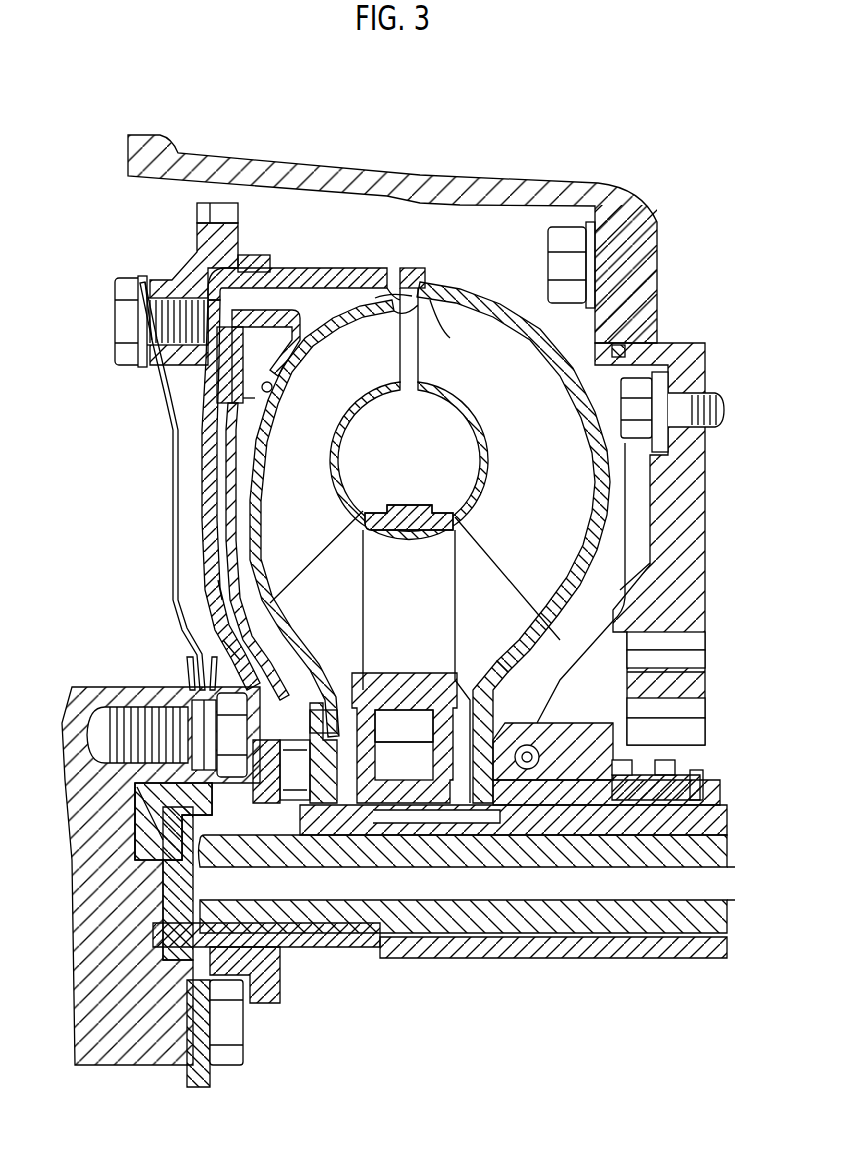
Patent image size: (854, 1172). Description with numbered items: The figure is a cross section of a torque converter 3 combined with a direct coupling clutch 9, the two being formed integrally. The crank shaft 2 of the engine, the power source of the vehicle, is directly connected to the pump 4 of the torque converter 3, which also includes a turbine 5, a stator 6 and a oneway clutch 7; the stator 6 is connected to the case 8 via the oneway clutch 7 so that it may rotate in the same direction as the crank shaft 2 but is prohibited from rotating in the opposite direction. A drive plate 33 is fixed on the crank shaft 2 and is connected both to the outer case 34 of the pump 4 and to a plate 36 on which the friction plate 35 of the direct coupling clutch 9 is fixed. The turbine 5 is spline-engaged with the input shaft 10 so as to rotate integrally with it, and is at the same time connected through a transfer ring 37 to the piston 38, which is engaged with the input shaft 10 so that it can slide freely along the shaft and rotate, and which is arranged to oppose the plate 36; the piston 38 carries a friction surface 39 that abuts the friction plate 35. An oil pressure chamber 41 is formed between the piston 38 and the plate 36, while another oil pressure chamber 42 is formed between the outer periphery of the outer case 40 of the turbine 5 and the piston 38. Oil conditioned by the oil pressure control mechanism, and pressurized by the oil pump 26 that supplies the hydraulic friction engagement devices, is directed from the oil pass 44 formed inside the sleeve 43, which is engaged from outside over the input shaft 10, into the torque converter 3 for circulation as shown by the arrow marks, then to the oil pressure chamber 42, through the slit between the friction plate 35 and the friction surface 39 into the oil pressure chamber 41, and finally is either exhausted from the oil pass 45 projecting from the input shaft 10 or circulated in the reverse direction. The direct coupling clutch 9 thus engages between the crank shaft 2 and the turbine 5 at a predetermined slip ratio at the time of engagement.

The crank shaft 2 is at (75, 815).
The torque converter 3 is at (470, 213).
The pump 4 is at (487, 340).
The turbine 5 is at (334, 340).
The stator 6 is at (363, 622).
The oneway clutch 7 is at (403, 760).
The case 8 is at (544, 186).
The direct coupling clutch 9 is at (162, 390).
The input shaft 10 is at (727, 840).
The oil pump 26 is at (700, 644).
The drive plate 33 is at (172, 477).
The outer case 34 is at (562, 352).
The friction plate 35 is at (198, 400).
The plate 36 is at (195, 500).
The transfer ring 37 is at (244, 318).
The piston 38 is at (213, 560).
The friction surface 39 is at (250, 405).
The outer case 40 is at (273, 390).
The oil pressure chamber 41 is at (222, 605).
The oil pressure chamber 42 is at (282, 357).
The sleeve 43 is at (631, 785).
The oil pass 44 is at (677, 790).
The oil pass 45 is at (502, 898).